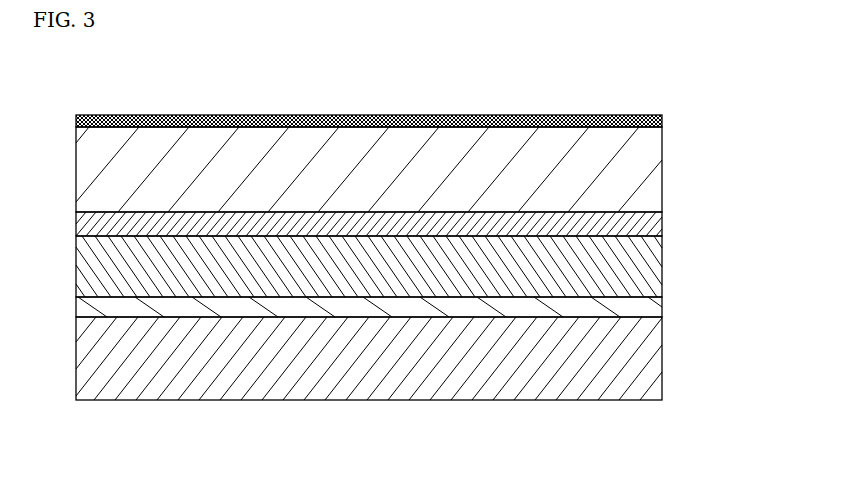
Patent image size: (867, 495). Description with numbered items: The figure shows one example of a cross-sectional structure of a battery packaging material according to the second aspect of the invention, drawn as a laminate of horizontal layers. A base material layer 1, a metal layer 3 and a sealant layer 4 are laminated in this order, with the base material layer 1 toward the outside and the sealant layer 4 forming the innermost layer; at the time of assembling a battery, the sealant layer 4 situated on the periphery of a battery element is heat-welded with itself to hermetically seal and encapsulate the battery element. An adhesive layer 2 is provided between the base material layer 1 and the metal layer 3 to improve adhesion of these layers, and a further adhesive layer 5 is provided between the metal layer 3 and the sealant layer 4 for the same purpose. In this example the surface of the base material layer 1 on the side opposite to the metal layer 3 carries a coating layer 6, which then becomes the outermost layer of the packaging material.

The base material layer 1 is at (662, 168).
The adhesive layer 2 is at (662, 225).
The metal layer 3 is at (662, 273).
The sealant layer 4 is at (662, 355).
The adhesive layer 5 is at (662, 310).
The coating layer 6 is at (663, 122).